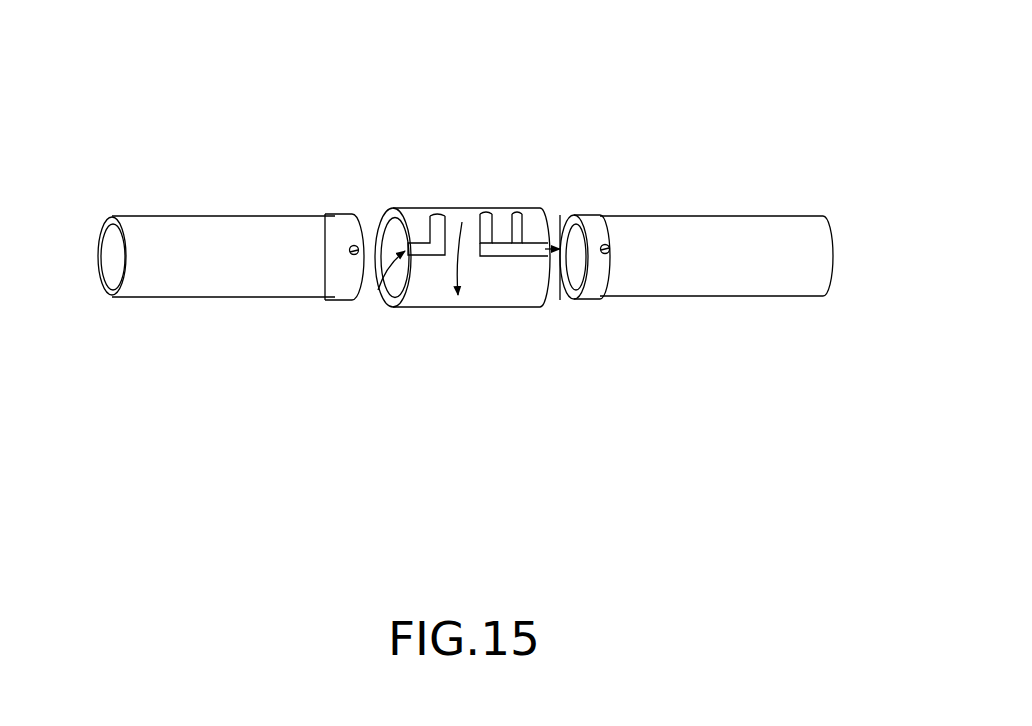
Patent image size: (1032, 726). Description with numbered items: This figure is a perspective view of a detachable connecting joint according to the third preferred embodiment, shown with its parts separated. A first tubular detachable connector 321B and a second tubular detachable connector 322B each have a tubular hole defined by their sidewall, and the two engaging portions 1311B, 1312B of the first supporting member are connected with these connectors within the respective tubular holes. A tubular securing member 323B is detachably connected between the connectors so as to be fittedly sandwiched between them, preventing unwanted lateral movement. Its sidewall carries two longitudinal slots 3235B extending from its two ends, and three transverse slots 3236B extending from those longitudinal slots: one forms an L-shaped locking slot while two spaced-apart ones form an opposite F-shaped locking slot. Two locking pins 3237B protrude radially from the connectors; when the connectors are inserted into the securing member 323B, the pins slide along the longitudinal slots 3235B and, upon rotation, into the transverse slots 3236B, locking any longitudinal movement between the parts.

The engaging portion 1312B is at (160, 268).
The engaging portion 1311B is at (775, 280).
The second tubular detachable connector 322B is at (330, 308).
The first tubular detachable connector 321B is at (592, 315).
The securing member 323B is at (445, 210).
The longitudinal slot 3235B is at (573, 215).
The transverse slot 3236B is at (515, 210).
The locking pin 3237B is at (354, 255).